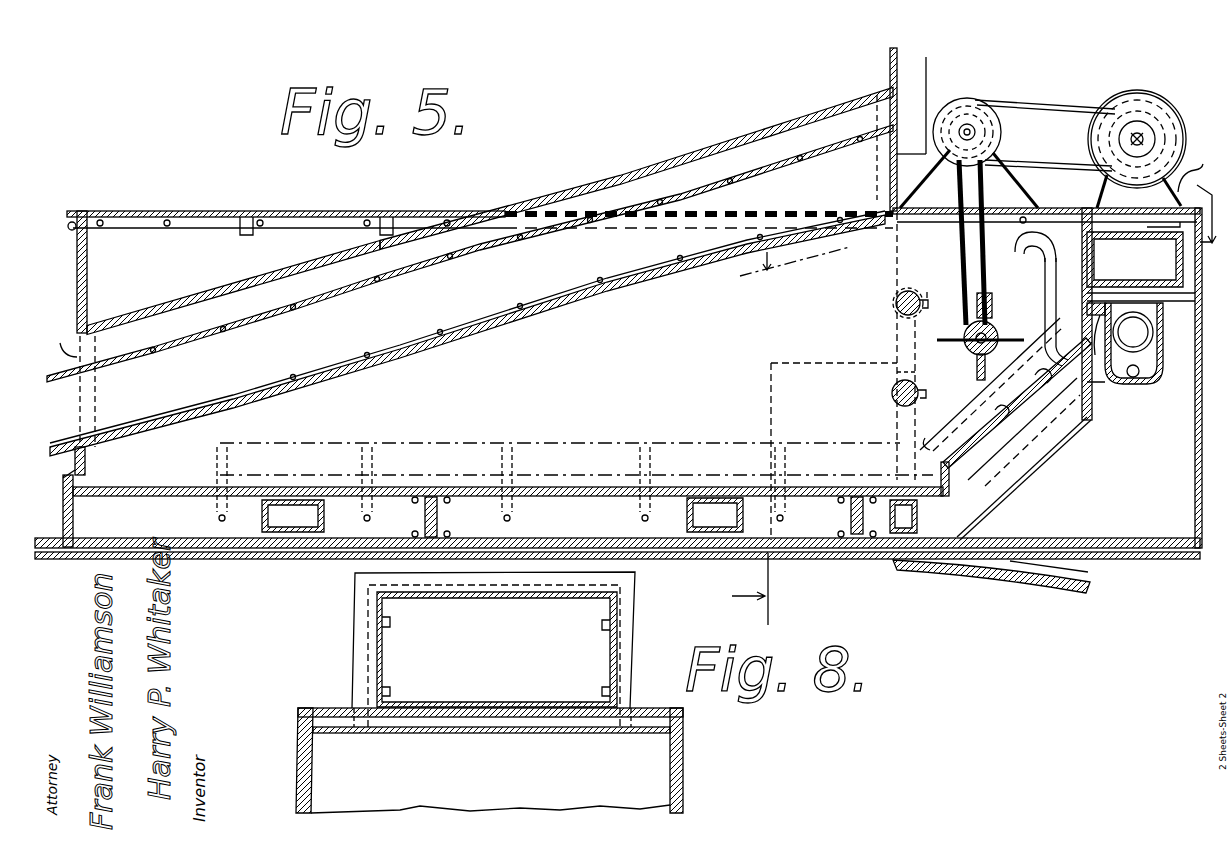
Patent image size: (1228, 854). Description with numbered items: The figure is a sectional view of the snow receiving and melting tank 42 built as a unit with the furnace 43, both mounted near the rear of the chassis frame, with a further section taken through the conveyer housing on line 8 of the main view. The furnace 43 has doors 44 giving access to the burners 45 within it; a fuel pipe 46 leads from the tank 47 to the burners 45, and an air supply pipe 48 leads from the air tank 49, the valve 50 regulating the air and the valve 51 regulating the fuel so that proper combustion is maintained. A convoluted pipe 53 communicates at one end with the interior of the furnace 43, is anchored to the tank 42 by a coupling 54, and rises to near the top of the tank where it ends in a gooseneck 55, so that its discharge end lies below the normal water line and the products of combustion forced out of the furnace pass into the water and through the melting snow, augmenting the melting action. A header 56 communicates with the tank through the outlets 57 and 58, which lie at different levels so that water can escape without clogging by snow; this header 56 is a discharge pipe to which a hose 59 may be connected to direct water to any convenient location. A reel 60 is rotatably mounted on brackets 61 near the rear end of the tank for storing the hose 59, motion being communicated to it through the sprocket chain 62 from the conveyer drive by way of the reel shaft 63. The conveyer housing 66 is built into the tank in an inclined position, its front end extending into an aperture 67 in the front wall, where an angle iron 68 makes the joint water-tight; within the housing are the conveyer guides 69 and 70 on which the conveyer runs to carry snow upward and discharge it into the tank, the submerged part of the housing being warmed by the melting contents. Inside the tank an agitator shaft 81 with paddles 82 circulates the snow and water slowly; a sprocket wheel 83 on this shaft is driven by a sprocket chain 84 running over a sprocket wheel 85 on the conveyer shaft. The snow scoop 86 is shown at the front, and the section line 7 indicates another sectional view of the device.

In FIG. 5, the section line 7- 7 is at (969, 229).
In FIG. 5, the section line 8— 8 is at (880, 262).
In FIG. 5, the snow receiving and melting tank 42 is at (355, 236).
In FIG. 5, the furnace 43 is at (508, 512).
In FIG. 8, the furnace 43 is at (685, 764).
In FIG. 5, the door 44 is at (270, 580).
In FIG. 5, the burner 45 is at (218, 518).
In FIG. 5, the fuel pipe 46 is at (700, 445).
In FIG. 5, the tank 47 is at (1135, 254).
In FIG. 5, the air supply pipe 48 is at (653, 477).
In FIG. 5, the air tank 49 is at (1152, 347).
In FIG. 5, the valve 50 is at (1131, 378).
In FIG. 5, the valve 51 is at (1125, 343).
In FIG. 5, the pipe 53 is at (1024, 478).
In FIG. 5, the coupling 54 is at (1017, 420).
In FIG. 5, the gooseneck 55 is at (1037, 253).
In FIG. 5, the header 56 is at (890, 372).
In FIG. 5, the outlet 57 is at (917, 293).
In FIG. 5, the outlet 58 is at (896, 404).
In FIG. 5, the hose 59 is at (1037, 583).
In FIG. 5, the reel 60 is at (1186, 129).
In FIG. 5, the bracket 61 is at (1202, 172).
In FIG. 5, the sprocket chain 62 is at (1040, 105).
In FIG. 5, the reel shaft 63 is at (1141, 135).
In FIG. 5, the conveyer housing 66 is at (574, 190).
In FIG. 8, the conveyer housing 66 is at (636, 601).
In FIG. 5, the aperture 67 is at (75, 357).
In FIG. 5, the angle iron 68 is at (97, 326).
In FIG. 5, the conveyer guide 69 is at (205, 328).
In FIG. 8, the conveyer guide 69 is at (398, 624).
In FIG. 5, the conveyer guide 70 is at (234, 388).
In FIG. 8, the conveyer guide 70 is at (398, 693).
In FIG. 5, the shaft 81 is at (997, 320).
In FIG. 5, the paddle 82 is at (954, 348).
In FIG. 5, the sprocket wheel 83 is at (992, 270).
In FIG. 5, the sprocket chain 84 is at (1040, 180).
In FIG. 5, the sprocket wheel 85 is at (996, 98).
In FIG. 5, the snow scoop 86 is at (919, 75).